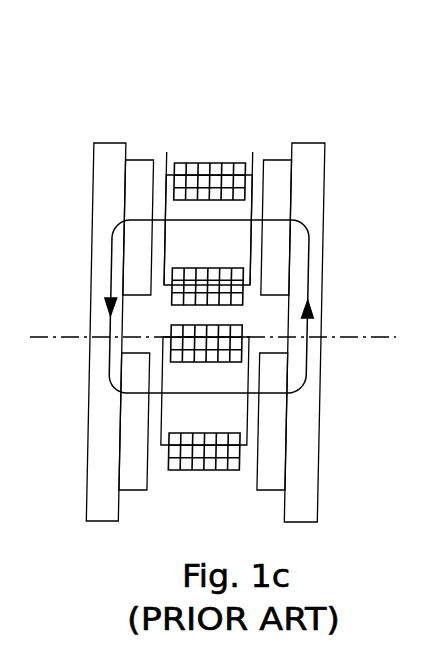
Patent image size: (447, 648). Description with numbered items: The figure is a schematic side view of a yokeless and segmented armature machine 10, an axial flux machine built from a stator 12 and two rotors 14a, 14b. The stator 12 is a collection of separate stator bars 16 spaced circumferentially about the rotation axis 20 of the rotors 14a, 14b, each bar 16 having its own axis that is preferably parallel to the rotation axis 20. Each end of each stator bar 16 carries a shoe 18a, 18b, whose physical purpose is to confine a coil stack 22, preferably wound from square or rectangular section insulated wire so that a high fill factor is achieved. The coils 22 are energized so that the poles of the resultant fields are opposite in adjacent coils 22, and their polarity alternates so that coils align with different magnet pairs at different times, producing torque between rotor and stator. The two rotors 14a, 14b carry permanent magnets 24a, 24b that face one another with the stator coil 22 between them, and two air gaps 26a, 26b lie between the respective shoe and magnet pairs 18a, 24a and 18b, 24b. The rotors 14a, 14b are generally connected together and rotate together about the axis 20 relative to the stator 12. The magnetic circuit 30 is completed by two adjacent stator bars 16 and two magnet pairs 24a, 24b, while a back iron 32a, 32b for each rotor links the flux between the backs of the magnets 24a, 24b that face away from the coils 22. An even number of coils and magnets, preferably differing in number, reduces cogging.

The yokeless and segmented armature machine 10 is at (250, 53).
The stator 12 is at (192, 488).
The rotor 14a is at (100, 522).
The rotor 14b is at (305, 523).
The stator bar 16 is at (205, 207).
The shoe 18a is at (160, 183).
The shoe 18b is at (253, 165).
The rotation axis 20 is at (52, 336).
The coil stack 22 is at (184, 163).
The permanent magnet 24a is at (137, 266).
The permanent magnet 24b is at (280, 276).
The air gap 26a is at (160, 178).
The air gap 26b is at (258, 190).
The magnetic circuit 30 is at (308, 358).
The back iron 32a is at (100, 482).
The back iron 32b is at (305, 472).